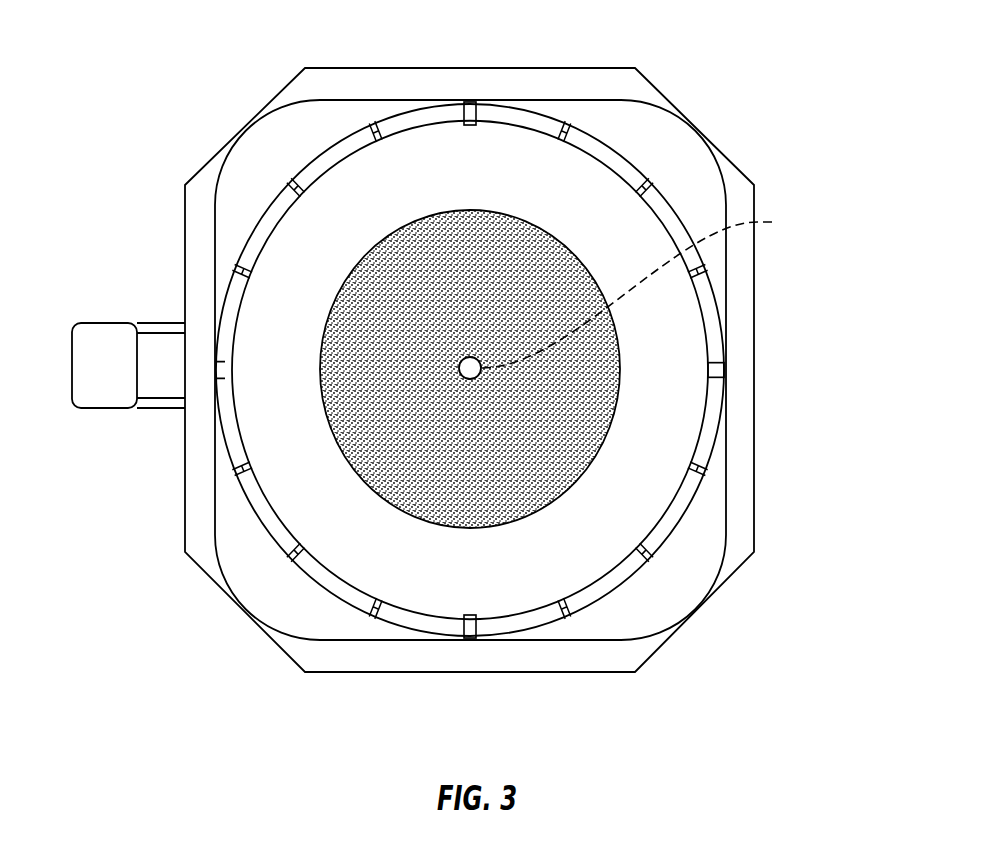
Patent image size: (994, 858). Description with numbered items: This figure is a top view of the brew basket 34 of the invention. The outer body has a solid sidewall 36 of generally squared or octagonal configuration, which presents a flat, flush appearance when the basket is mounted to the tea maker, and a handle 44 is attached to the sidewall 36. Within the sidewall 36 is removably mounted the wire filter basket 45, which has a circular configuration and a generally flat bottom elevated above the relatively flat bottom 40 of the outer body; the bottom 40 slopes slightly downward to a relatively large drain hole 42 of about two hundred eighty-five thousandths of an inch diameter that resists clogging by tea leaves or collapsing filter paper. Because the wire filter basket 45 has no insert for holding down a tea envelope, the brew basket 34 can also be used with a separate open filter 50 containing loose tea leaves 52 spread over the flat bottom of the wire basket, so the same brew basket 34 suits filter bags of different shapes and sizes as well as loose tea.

The brew basket 34 is at (755, 66).
The sidewall 36 is at (755, 424).
The bottom 40 is at (567, 470).
The drain hole 42 is at (645, 287).
The handle 44 is at (101, 323).
The wire filter basket 45 is at (678, 218).
The open filter 50 is at (472, 210).
The tea leaves 52 is at (475, 248).